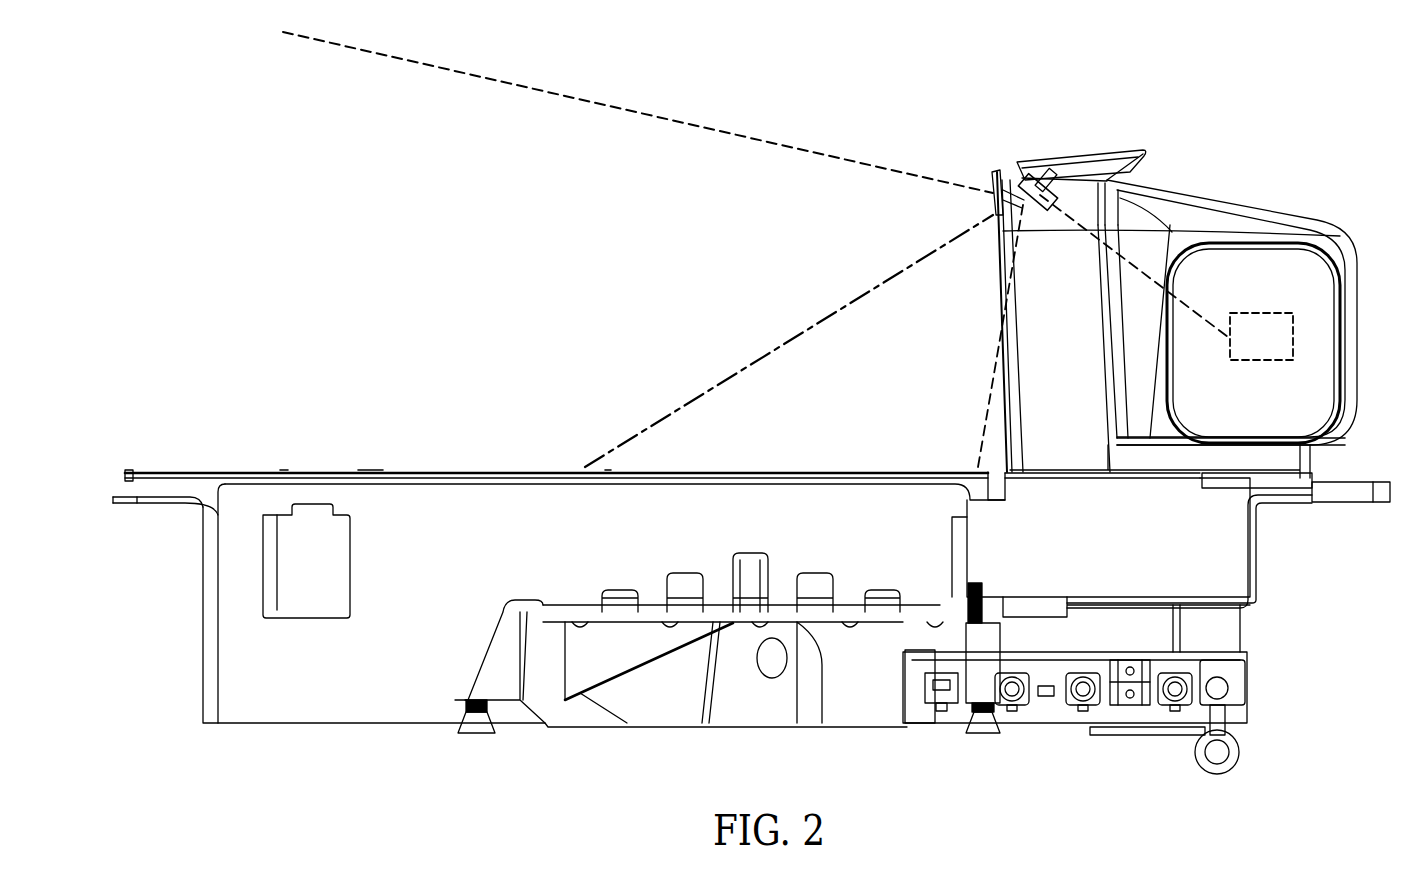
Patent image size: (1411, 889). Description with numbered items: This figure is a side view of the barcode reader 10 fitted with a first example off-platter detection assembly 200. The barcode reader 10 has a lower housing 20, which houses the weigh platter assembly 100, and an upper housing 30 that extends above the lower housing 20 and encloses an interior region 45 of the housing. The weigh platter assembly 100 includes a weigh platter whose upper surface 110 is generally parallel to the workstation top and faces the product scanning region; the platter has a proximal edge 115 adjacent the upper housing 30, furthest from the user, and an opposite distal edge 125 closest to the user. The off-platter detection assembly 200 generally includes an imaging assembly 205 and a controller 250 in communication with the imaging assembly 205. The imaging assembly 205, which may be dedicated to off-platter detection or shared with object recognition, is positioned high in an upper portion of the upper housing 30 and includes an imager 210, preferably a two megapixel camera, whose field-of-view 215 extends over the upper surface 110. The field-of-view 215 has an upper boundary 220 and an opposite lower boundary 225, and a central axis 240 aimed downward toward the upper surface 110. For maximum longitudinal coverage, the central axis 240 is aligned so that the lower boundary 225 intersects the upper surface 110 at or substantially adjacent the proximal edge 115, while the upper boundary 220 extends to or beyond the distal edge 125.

The barcode reader 10 is at (902, 74).
The lower housing 20 is at (191, 612).
The upper housing 30 is at (1062, 146).
The interior region 45 is at (1098, 566).
The weigh platter assembly 100 is at (383, 463).
The upper surface 110 is at (312, 470).
The proximal edge 115 is at (1007, 482).
The distal edge 125 is at (125, 480).
The off-platter detection assembly 200 is at (1050, 236).
The imaging assembly 205 is at (1003, 168).
The imager 210 is at (1055, 163).
The field-of-view 215 is at (757, 184).
The upper boundary 220 is at (560, 93).
The lower boundary 225 is at (985, 418).
The central axis 240 is at (803, 330).
The controller 250 is at (1262, 312).